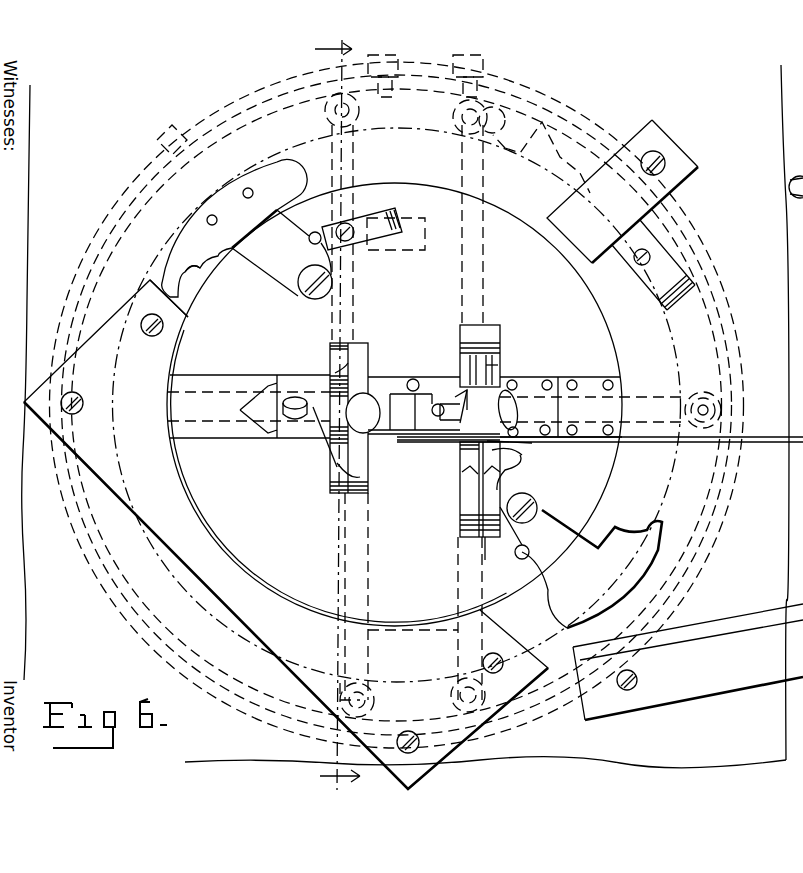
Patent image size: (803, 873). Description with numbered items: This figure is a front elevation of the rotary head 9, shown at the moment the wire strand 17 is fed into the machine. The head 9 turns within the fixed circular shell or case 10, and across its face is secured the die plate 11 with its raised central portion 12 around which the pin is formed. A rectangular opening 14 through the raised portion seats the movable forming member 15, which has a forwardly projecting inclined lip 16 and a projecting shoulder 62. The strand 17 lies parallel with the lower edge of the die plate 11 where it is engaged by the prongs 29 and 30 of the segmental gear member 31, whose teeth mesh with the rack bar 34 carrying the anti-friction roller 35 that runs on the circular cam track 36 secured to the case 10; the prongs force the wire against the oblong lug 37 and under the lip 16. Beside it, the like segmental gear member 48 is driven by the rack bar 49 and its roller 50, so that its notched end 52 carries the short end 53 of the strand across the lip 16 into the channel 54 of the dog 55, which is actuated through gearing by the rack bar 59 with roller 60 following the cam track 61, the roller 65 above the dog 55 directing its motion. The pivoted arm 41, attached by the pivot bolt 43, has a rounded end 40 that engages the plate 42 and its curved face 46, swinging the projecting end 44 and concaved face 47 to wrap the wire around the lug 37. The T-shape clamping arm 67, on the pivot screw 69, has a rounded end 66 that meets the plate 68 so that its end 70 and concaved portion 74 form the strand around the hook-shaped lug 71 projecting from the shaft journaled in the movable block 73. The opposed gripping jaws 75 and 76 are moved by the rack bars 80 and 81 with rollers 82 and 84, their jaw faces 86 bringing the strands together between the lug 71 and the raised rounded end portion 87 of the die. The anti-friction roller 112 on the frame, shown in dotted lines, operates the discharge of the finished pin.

The head 9 is at (286, 534).
The circular shell or case 10 is at (502, 790).
The die plate 11 is at (418, 382).
The raised central portion 12 is at (337, 415).
The rectangular opening 14 is at (397, 390).
The movable forming member 15 is at (425, 436).
The inclined lip 16 is at (477, 406).
The wire strand 17 is at (768, 444).
The prong 29 is at (512, 462).
The prong 30 is at (520, 450).
The segmental gear member 31 is at (491, 551).
The rack bar 34 is at (506, 285).
The anti-friction roller 35 is at (508, 115).
The circular cam track 36 is at (718, 368).
The oblong lug 37 is at (516, 408).
The rounded end 40 is at (548, 603).
The pivoted arm 41 is at (602, 569).
The plate 42 is at (413, 643).
The pivot bolt 43 is at (537, 505).
The projecting end 44 is at (664, 521).
The curved face 46 is at (300, 620).
The concaved face 47 is at (632, 530).
The segmental gear member 48 is at (460, 525).
The rack bar 49 is at (456, 169).
The anti-friction roller 50 is at (460, 110).
The notched end 52 is at (462, 478).
The short end 53 is at (445, 443).
The channel 54 is at (470, 362).
The dog 55 is at (495, 352).
The rack bar 59 is at (456, 664).
The anti-friction roller 60 is at (468, 710).
The circular cam track 61 is at (383, 105).
The projecting shoulder 62 is at (462, 392).
The anti-friction roller 65 is at (468, 344).
The rounded end 66 is at (240, 144).
The T-shape clamping arm 67 is at (234, 228).
The plate 68 is at (622, 215).
The pivot screw 69 is at (306, 272).
The end 70 is at (162, 275).
The hook-shaped lug 71 is at (295, 398).
The movable block 73 is at (212, 388).
The concaved portion 74 is at (191, 284).
The gripping jaw 75 is at (330, 343).
The gripping jaw 76 is at (366, 472).
The rack bar 80 is at (362, 208).
The rack bar 81 is at (338, 646).
The anti-friction roller 82 is at (355, 110).
The anti-friction roller 84 is at (374, 700).
The jaw faces 86 is at (332, 380).
The raised rounded end portion 87 is at (363, 413).
The anti-friction roller 112 is at (418, 236).